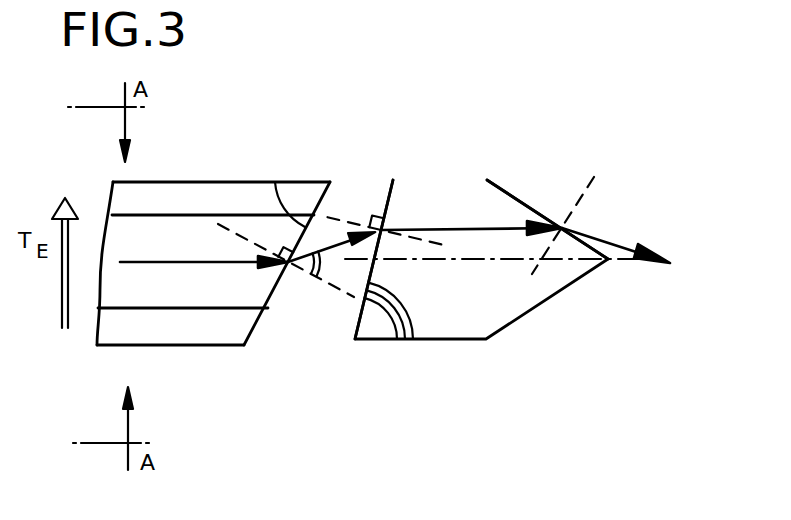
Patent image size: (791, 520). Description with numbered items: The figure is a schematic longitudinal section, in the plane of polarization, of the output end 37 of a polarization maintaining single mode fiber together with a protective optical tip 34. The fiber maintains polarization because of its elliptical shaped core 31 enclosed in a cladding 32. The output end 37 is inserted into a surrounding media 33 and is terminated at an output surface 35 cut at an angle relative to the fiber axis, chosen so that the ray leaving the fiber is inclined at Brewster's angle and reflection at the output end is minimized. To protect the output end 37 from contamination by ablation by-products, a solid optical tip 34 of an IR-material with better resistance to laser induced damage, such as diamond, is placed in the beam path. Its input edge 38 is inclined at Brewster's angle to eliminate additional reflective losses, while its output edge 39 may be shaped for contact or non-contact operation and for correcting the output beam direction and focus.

The elliptical shaped core 31 is at (264, 300).
The cladding 32 is at (115, 328).
The surrounding media 33 is at (302, 335).
The optical tip 34 is at (538, 293).
The fiber exit face 35 is at (328, 197).
The output end 37 is at (232, 181).
The input edge 38 is at (388, 201).
The output edge 39 is at (573, 282).